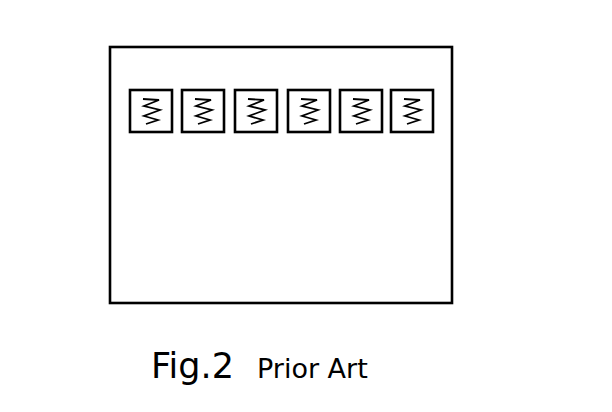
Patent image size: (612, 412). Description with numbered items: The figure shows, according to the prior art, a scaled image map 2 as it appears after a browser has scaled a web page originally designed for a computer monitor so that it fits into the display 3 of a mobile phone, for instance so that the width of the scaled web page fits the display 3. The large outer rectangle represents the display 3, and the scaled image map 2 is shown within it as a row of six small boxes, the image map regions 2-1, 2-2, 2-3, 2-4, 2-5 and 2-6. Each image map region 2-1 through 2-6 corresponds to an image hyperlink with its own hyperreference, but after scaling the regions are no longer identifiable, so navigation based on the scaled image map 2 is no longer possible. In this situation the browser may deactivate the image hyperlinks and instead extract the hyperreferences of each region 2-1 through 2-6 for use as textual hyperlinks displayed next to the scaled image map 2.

The scaled image map 2 is at (392, 157).
The image map region 2-1 is at (130, 101).
The image map region 2-2 is at (190, 90).
The image map region 2-3 is at (267, 90).
The image map region 2-4 is at (302, 90).
The image map region 2-5 is at (370, 90).
The image map region 2-6 is at (433, 103).
The display 3 is at (451, 175).